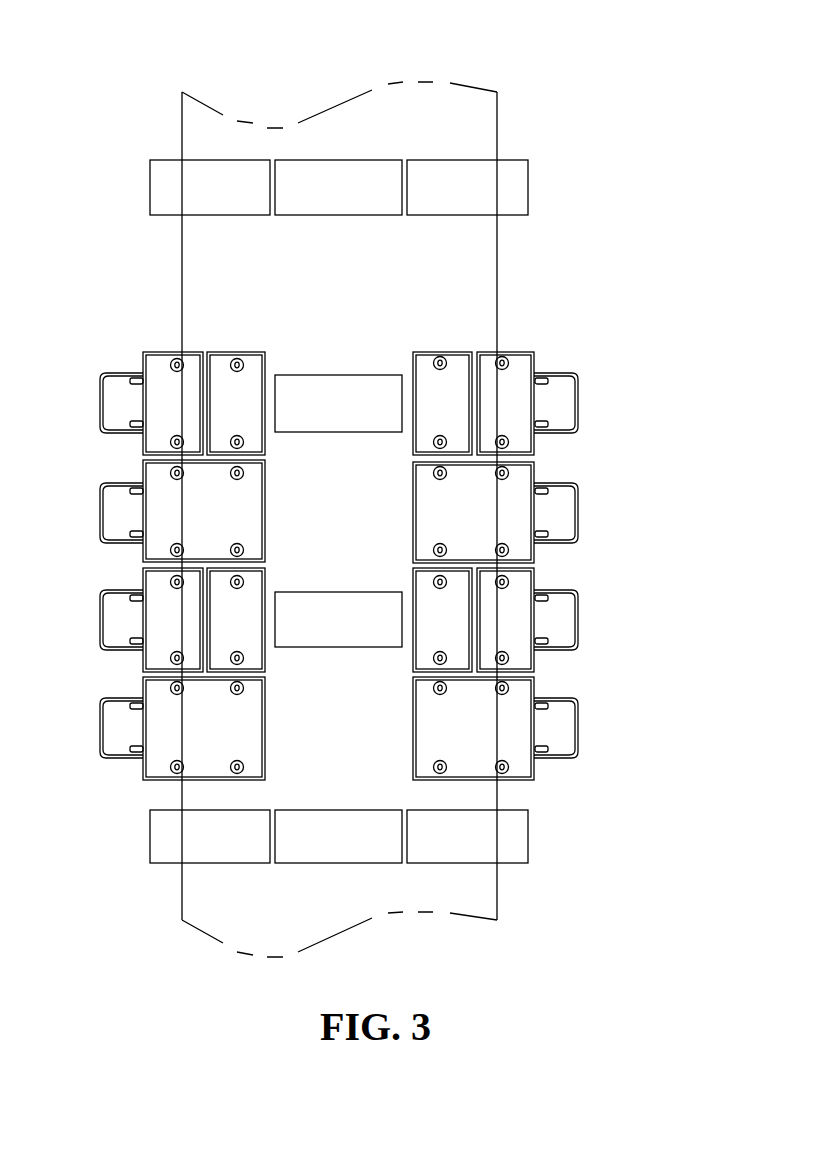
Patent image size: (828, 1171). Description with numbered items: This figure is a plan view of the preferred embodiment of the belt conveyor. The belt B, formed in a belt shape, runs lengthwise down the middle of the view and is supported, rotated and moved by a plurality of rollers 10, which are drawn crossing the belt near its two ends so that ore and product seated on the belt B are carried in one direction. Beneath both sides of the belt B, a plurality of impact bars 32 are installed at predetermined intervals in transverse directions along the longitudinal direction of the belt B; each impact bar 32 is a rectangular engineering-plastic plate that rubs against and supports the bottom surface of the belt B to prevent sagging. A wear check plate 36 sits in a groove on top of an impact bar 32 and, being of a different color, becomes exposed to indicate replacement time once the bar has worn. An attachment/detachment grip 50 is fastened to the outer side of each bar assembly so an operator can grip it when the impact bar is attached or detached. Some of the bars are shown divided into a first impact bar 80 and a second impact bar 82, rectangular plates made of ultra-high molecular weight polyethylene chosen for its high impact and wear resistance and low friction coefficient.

The roller 10 is at (348, 172).
The belt B is at (497, 275).
The wear check plate 36 is at (502, 363).
The attachment/detachment grip 50 is at (580, 402).
The impact bar 32 is at (535, 470).
The second impact bar 82 is at (525, 583).
The first impact bar 80 is at (460, 658).